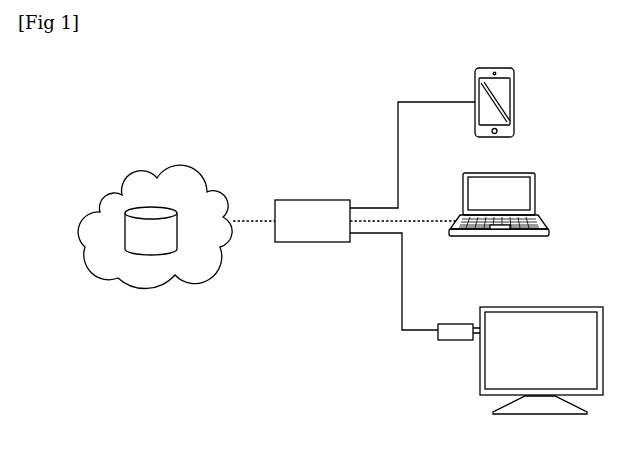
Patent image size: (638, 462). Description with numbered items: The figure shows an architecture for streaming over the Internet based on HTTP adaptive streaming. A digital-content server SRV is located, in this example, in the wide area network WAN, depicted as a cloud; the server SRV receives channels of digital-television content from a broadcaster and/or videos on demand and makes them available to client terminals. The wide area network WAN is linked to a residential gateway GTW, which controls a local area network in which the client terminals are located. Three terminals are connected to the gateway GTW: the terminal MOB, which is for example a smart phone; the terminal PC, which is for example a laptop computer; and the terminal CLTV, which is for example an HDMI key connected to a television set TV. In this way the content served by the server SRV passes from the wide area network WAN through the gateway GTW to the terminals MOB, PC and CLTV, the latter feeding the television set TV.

The wide area network WAN is at (184, 167).
The digital-content server SRV is at (125, 225).
The residential gateway GTW is at (294, 200).
The terminal MOB is at (515, 88).
The terminal PC is at (535, 202).
The terminal CLTV is at (453, 324).
The television set TV is at (563, 307).